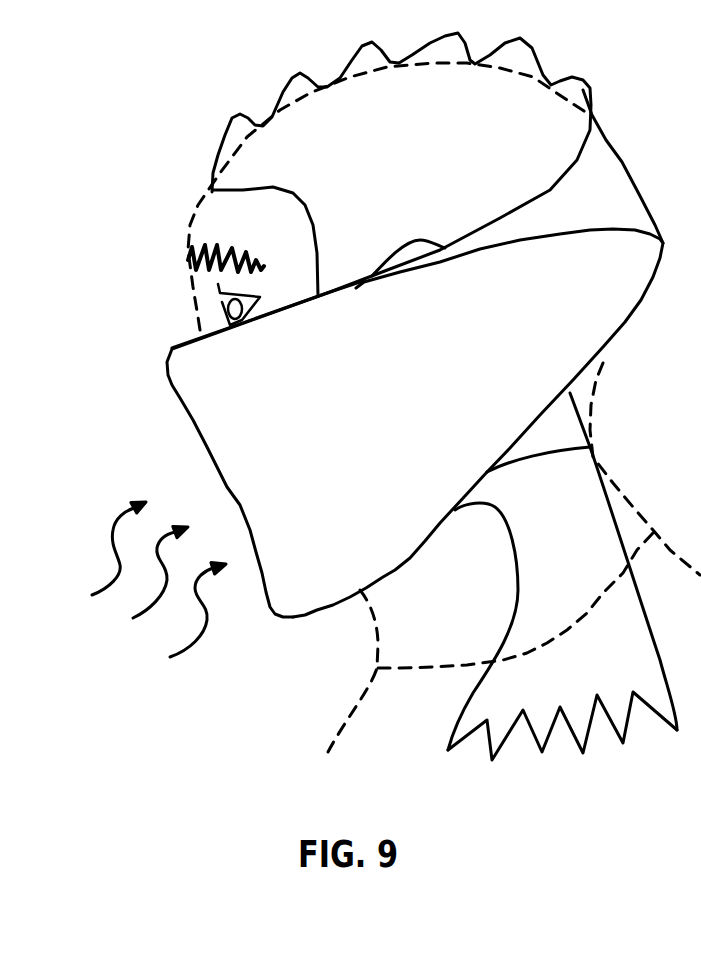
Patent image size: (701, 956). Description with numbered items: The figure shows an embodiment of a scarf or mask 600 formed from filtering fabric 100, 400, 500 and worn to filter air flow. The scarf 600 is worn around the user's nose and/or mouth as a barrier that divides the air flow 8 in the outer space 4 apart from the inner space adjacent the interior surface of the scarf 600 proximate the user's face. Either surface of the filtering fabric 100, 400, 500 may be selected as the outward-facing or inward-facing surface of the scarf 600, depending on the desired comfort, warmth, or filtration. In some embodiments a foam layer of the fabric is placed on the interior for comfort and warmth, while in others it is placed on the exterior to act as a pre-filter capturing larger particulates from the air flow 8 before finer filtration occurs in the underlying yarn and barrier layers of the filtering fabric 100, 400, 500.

The outer space 4 is at (49, 483).
The air flow 8 is at (115, 532).
The filtering fabric 100 is at (178, 386).
The filtering fabric 400 is at (415, 423).
The filtering fabric 500 is at (415, 423).
The scarf or mask 600 is at (523, 373).